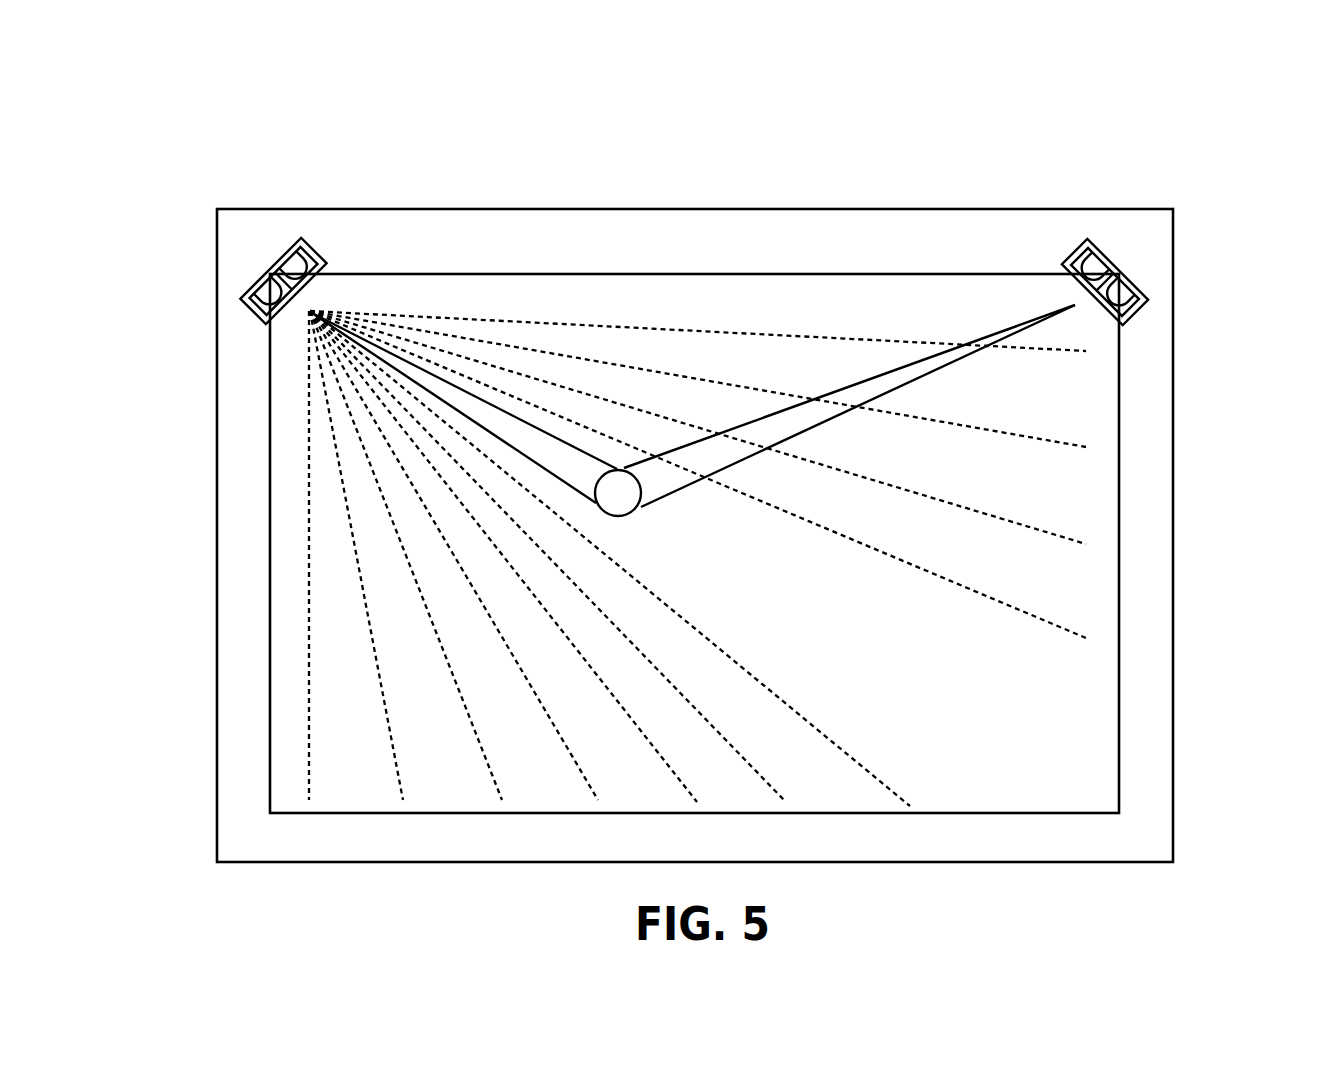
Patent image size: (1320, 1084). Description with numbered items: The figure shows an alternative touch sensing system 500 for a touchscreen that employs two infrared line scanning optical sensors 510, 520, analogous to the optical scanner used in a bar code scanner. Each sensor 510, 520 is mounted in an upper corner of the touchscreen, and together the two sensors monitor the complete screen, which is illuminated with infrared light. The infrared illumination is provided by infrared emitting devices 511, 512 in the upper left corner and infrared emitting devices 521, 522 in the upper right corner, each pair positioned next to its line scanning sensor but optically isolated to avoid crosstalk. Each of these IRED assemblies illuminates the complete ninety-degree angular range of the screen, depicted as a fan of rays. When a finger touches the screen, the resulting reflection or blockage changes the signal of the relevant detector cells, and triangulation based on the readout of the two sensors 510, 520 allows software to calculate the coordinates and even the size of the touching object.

The touch sensing system 500 is at (1030, 98).
The infrared line scanning optical sensor 510 is at (270, 268).
The infrared emitting device 511 is at (290, 255).
The infrared emitting device 512 is at (258, 318).
The infrared line scanning optical sensor 520 is at (1115, 277).
The infrared emitting device 521 is at (1105, 252).
The infrared emitting device 522 is at (1135, 287).